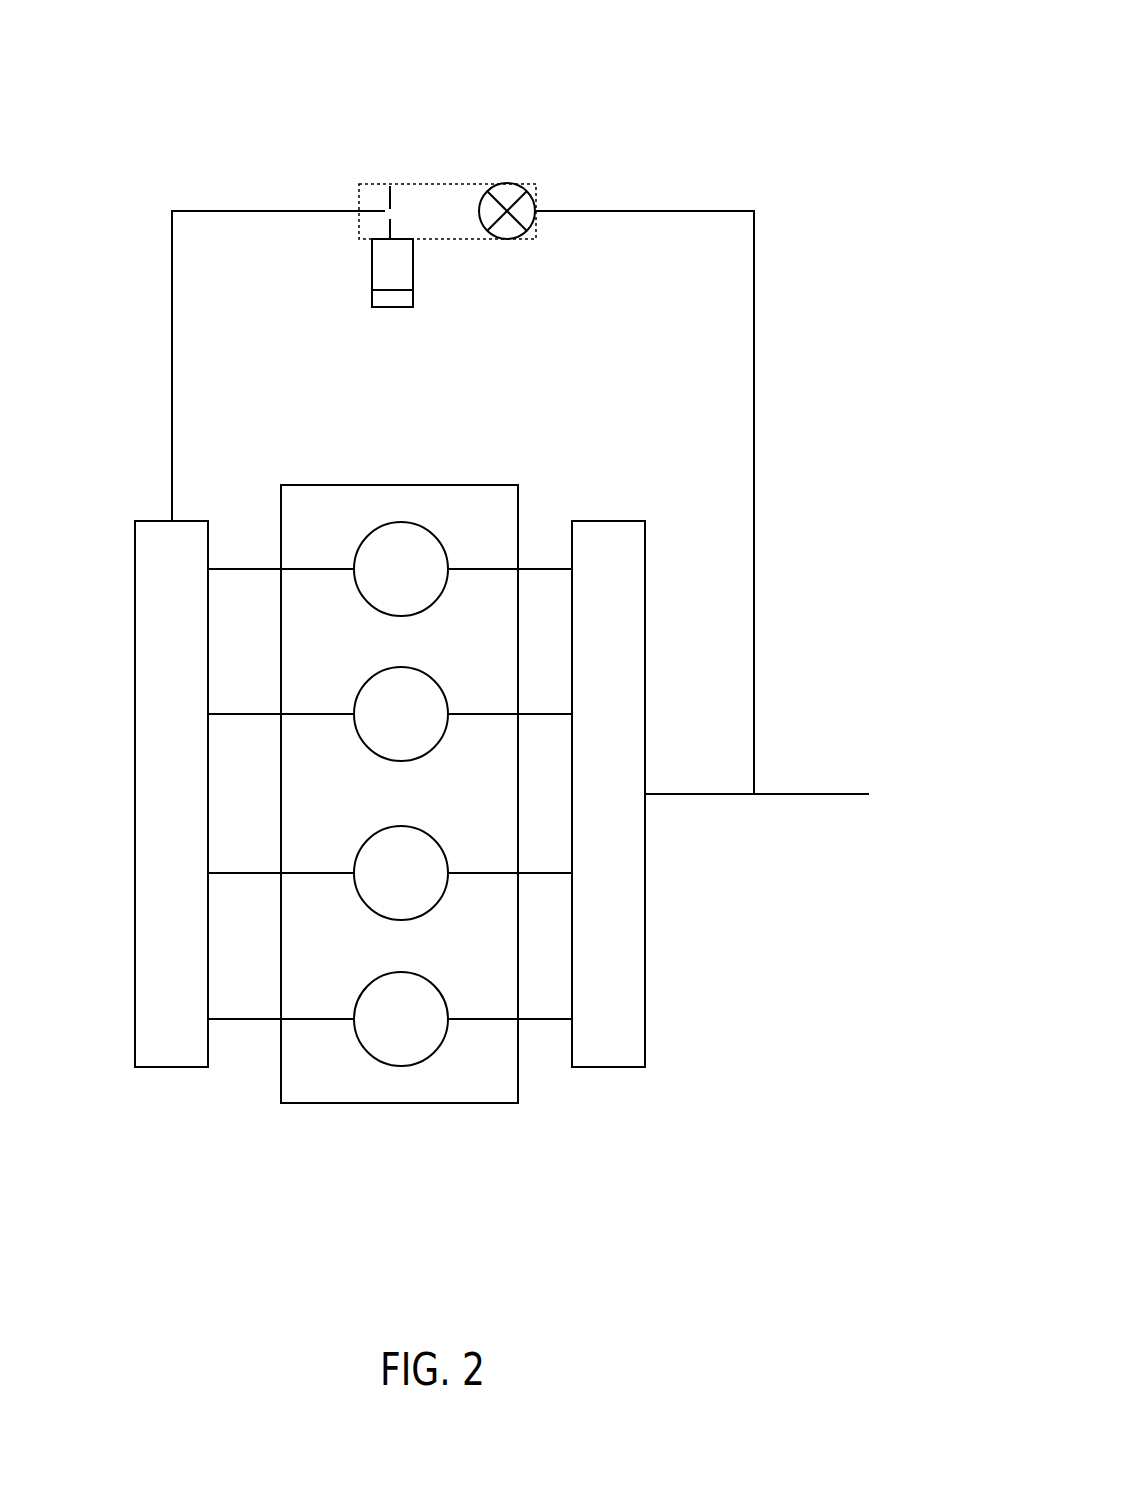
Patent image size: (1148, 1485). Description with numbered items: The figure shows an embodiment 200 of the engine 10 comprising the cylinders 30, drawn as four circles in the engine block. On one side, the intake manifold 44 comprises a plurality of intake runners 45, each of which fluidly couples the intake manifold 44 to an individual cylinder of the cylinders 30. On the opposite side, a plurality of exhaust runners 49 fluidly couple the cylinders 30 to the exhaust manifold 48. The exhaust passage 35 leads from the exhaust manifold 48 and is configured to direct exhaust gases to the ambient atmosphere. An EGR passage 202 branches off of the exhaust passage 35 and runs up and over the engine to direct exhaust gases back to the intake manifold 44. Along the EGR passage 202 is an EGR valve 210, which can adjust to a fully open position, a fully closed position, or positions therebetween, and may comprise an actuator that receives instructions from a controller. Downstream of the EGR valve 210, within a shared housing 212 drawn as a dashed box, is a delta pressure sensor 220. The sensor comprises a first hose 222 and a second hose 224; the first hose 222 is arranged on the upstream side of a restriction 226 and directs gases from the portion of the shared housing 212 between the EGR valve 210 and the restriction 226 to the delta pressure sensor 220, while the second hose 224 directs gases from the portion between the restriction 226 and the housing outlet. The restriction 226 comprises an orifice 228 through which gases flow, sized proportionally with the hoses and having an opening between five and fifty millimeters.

The embodiment 200 is at (756, 42).
The EGR passage 202 is at (755, 589).
The exhaust passage 35 is at (832, 795).
The shared housing 212 is at (458, 184).
The EGR valve 210 is at (503, 184).
The restriction 226 is at (392, 189).
The orifice 228 is at (386, 210).
The first hose 222 is at (413, 268).
The second hose 224 is at (372, 272).
The delta pressure sensor 220 is at (393, 307).
The engine 10 is at (303, 1104).
The cylinders 30 is at (402, 1066).
The intake manifold 44 is at (173, 1067).
The exhaust manifold 48 is at (628, 1067).
The intake runners 45 is at (238, 568).
The exhaust runners 49 is at (541, 567).